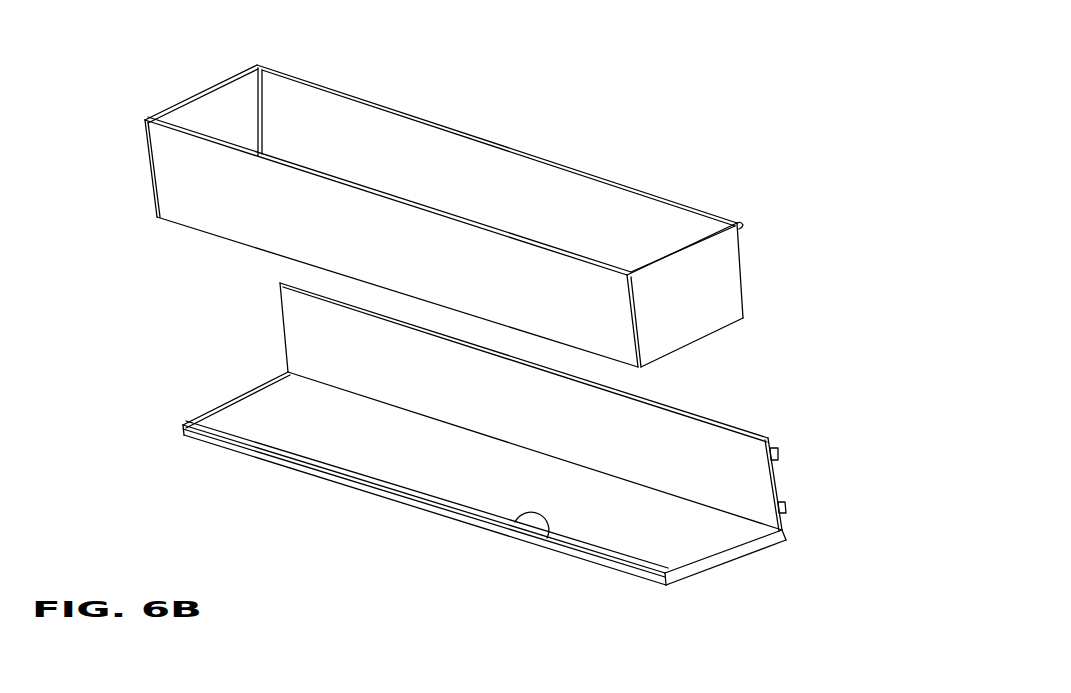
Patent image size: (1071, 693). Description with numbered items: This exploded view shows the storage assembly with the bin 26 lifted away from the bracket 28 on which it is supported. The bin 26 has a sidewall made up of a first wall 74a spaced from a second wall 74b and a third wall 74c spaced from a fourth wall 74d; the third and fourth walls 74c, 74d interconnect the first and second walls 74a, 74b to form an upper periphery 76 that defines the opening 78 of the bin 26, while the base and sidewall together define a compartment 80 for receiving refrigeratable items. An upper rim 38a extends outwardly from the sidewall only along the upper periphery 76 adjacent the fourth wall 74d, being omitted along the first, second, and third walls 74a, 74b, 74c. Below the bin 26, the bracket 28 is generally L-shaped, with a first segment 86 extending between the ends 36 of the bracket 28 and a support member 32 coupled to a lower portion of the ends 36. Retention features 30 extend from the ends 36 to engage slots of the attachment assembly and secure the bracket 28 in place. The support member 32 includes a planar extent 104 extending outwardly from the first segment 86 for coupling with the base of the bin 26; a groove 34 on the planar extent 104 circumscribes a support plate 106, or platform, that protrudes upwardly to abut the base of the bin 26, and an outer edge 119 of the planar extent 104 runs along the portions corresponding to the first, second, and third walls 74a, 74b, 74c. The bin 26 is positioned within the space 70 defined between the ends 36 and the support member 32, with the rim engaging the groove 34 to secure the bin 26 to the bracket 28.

The bin 26 is at (446, 193).
The bracket 28 is at (466, 454).
The retention feature 30 is at (787, 495).
The support member 32 is at (287, 370).
The groove 34 is at (516, 520).
The ends 36 is at (788, 538).
The upper rim 38a is at (665, 192).
The space 70 is at (444, 398).
The first wall 74a is at (697, 313).
The second wall 74b is at (213, 123).
The third wall 74c is at (263, 223).
The fourth wall 74d is at (423, 173).
The upper periphery 76 is at (560, 162).
The opening 78 is at (390, 143).
The compartment 80 is at (507, 208).
The first segment 86 is at (673, 467).
The planar extent 104 is at (607, 470).
The support plate 106 is at (479, 485).
The outer edge 119 is at (183, 420).